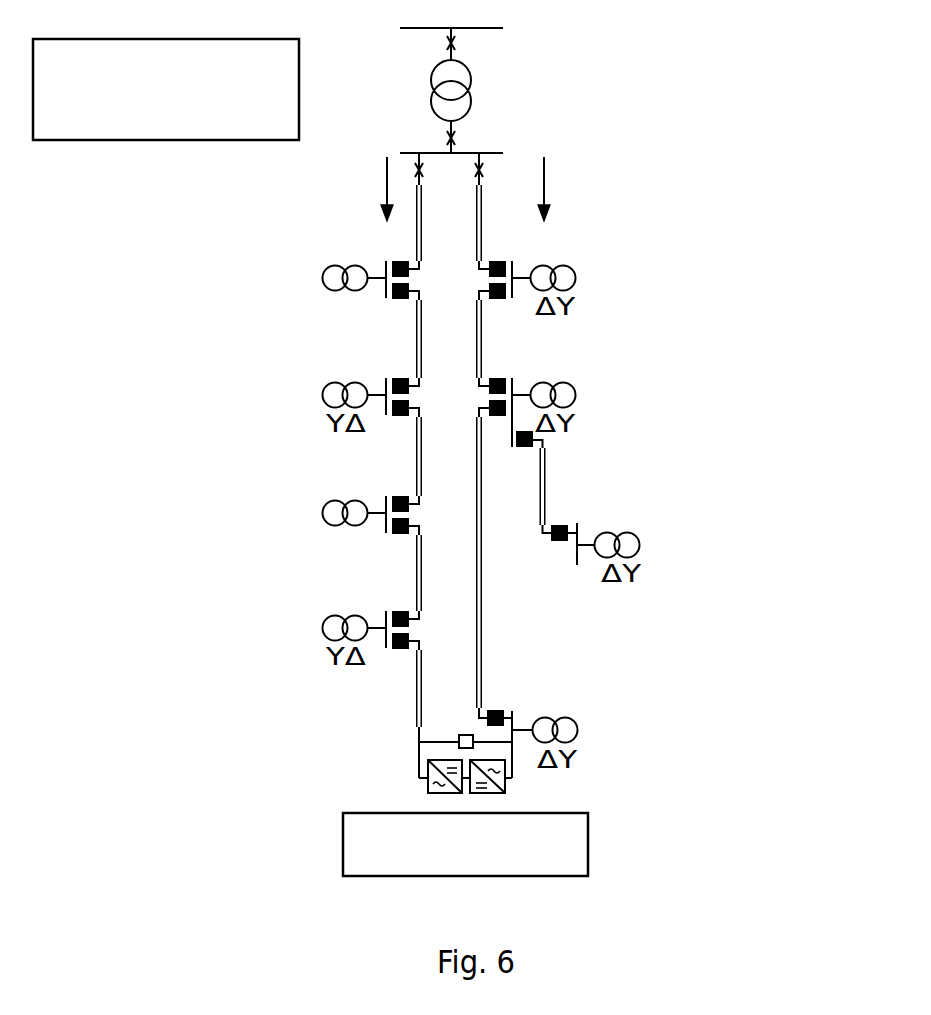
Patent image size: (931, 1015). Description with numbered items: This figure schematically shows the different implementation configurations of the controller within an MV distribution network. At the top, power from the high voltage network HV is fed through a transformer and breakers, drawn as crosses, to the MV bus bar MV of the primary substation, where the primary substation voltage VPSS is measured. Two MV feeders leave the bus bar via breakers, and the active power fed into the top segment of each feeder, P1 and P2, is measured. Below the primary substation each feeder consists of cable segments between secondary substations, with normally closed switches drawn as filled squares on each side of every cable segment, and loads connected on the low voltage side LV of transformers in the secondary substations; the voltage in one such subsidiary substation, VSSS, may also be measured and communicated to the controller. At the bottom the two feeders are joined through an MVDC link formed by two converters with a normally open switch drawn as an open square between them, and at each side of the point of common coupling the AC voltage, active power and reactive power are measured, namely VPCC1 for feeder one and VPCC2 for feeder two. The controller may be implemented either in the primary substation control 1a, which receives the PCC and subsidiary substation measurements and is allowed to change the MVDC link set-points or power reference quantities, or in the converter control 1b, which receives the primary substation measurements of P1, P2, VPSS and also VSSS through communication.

The primary substation control 1a is at (182, 86).
The converter control 1b is at (482, 842).
The high voltage network HV is at (429, 22).
The MV bus bar MV is at (417, 142).
The low voltage side LV is at (349, 287).
The active power fed into the top segment of feeder 1 P1 is at (365, 189).
The active power fed into the top segment of feeder 2 P2 is at (569, 189).
The voltage in the primary substation VPSS is at (505, 90).
The voltage in a subsidiary substation VSSS is at (324, 525).
The AC voltage at the PCC of feeder 1 VPCC1 is at (278, 812).
The AC voltage at the PCC of feeder 2 VPCC2 is at (654, 812).